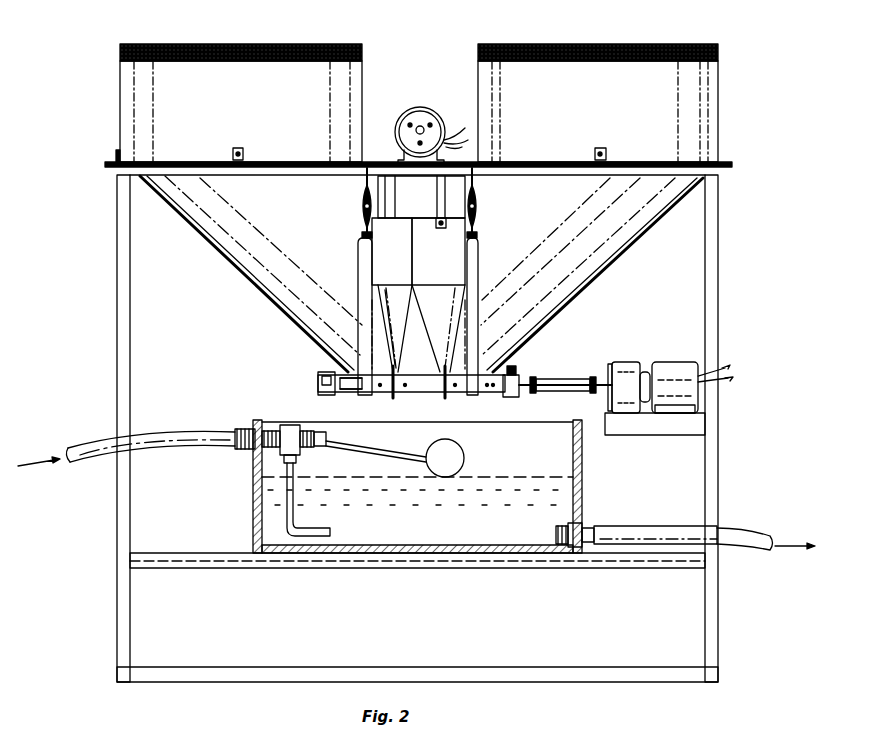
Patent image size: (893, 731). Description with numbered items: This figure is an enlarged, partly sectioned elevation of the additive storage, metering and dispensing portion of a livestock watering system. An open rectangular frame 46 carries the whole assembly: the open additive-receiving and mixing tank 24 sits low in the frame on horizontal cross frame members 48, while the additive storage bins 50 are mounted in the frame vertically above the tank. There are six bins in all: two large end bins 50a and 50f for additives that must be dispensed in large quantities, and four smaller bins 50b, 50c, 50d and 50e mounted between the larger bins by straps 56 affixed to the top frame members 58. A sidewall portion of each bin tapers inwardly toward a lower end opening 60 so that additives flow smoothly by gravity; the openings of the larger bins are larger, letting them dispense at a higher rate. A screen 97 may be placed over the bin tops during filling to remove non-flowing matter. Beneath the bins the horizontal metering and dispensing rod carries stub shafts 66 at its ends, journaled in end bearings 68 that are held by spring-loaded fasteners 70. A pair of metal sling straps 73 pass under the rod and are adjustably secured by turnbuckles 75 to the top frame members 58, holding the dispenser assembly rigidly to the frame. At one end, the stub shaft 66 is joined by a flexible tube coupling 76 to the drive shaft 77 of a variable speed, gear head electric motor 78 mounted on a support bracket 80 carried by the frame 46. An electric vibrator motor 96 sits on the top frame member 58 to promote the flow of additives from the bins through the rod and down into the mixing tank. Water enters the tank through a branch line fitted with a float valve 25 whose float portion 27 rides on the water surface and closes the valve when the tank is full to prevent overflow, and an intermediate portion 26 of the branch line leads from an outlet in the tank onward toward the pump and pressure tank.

The additive-receiving and mixing tank 24 is at (253, 510).
The float valve 25 is at (289, 425).
The intermediate portion of the branch line 26 is at (615, 527).
The float portion 27 is at (465, 452).
The open rectangular frame 46 is at (115, 347).
The horizontal cross frame members 48 is at (232, 568).
The additive storage bins 50 is at (419, 87).
The large end bin 50a is at (292, 70).
The smaller bin 50b is at (385, 306).
The smaller bin 50c is at (405, 300).
The smaller bin 50d is at (452, 258).
The smaller bin 50e is at (462, 316).
The large end bin 50f is at (567, 72).
The straps 56 is at (383, 200).
The top frame members 58 is at (302, 168).
The lower end opening 60 is at (328, 364).
The stub shafts 66 is at (532, 383).
The end bearings 68 is at (510, 396).
The spring-loaded fasteners 70 is at (512, 368).
The metal sling straps 73 is at (365, 340).
The turnbuckles 75 is at (362, 207).
The flexible tube coupling 76 is at (555, 392).
The drive shaft 77 is at (612, 378).
The gear head electric motor 78 is at (680, 364).
The support bracket 80 is at (655, 436).
The electric vibrator motor 96 is at (416, 106).
The screen 97 is at (120, 48).